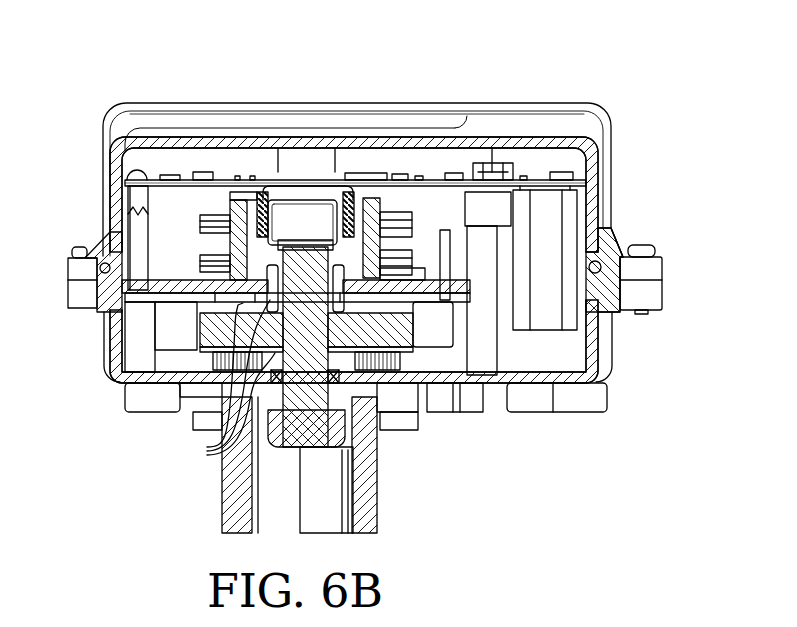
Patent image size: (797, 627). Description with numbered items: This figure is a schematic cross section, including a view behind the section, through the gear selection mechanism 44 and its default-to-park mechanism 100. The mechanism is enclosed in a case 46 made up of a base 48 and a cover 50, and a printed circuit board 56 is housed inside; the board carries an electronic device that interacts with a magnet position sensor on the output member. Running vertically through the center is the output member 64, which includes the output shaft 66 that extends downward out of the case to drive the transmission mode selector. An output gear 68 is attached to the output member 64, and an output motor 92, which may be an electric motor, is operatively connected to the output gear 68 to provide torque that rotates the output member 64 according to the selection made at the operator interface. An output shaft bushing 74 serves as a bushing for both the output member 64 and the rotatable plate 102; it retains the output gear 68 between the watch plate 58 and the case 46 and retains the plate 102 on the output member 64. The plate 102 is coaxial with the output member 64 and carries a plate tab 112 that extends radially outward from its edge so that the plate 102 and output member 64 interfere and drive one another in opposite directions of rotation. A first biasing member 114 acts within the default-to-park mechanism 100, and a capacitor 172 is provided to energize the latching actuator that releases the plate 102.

The gear selection mechanism 44 is at (323, 92).
The case 46 is at (665, 292).
The base 48 is at (108, 334).
The cover 50 is at (138, 121).
The printed circuit board 56 is at (270, 185).
The watch plate 58 is at (304, 224).
The output member 64 is at (387, 478).
The output shaft 66 is at (307, 380).
The output gear 68 is at (373, 284).
The output shaft bushing 74 is at (210, 455).
The output motor 92 is at (208, 163).
The default-to-park mechanism 100 is at (76, 200).
The rotatable plate 102 is at (360, 330).
The plate tab 112 is at (186, 283).
The first biasing member 114 is at (437, 233).
The capacitor 172 is at (548, 238).